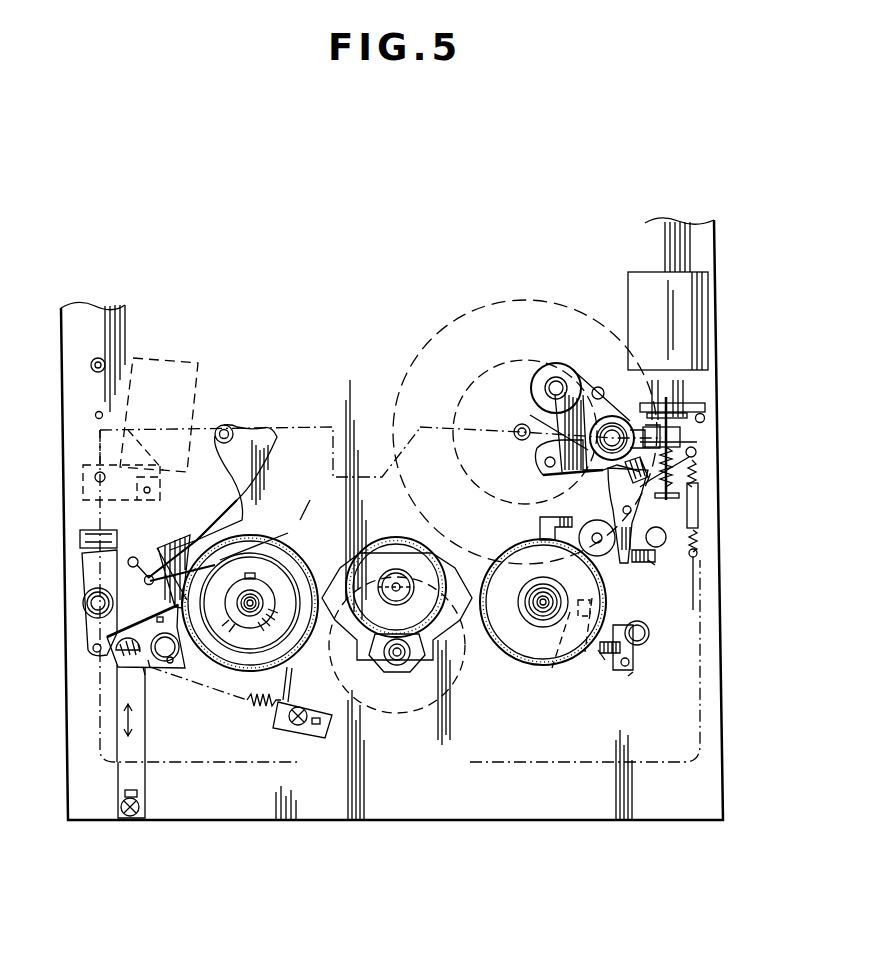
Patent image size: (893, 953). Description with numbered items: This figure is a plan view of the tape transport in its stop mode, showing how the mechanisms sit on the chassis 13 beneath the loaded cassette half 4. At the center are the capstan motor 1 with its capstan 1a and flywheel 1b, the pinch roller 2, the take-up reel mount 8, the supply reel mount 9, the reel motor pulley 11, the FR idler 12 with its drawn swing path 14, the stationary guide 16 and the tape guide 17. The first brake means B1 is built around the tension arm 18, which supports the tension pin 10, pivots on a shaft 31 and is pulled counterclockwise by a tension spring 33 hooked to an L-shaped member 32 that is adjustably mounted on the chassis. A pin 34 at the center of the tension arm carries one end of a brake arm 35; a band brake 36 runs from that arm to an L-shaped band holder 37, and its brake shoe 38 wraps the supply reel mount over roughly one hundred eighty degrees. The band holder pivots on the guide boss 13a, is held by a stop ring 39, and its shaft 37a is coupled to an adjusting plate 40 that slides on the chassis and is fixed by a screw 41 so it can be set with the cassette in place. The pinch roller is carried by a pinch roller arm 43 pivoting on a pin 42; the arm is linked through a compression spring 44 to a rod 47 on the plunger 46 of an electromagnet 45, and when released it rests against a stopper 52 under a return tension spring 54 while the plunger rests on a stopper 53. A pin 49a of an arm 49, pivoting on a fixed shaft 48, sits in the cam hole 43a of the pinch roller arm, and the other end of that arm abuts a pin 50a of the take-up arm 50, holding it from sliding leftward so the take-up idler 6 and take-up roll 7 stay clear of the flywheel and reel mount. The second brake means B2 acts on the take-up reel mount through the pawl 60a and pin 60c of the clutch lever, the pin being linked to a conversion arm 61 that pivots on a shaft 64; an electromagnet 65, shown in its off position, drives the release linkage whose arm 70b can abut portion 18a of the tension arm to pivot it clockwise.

The capstan motor 1 is at (485, 305).
The capstan 1a is at (512, 436).
The flywheel 1b is at (492, 366).
The pinch roller 2 is at (556, 363).
The cassette half 4 is at (700, 710).
The take-up idler 6 is at (630, 590).
The take-up roll 7 is at (587, 522).
The take-up reel mount 8 is at (506, 667).
The supply reel mount 9 is at (291, 660).
The tension pin 10 is at (224, 425).
The reel motor pulley 11 is at (401, 666).
The FR idler 12 is at (390, 537).
The chassis 13 is at (723, 670).
The guide boss 13a is at (177, 709).
The dashed circle roller path 14 is at (448, 670).
The stationary guide 16 is at (96, 410).
The tape guide 17 is at (96, 360).
The tension arm 18 is at (272, 466).
The portion of tension arm 18a is at (128, 577).
The shaft 31 is at (83, 605).
The L-shaped member 32 is at (332, 725).
The tension spring 33 is at (260, 708).
The pin 34 is at (134, 557).
The brake arm 35 is at (172, 548).
The band brake 36 is at (281, 531).
The band holder 37 is at (146, 622).
The shaft 37a is at (150, 665).
The brake shoe 38 is at (325, 570).
The stop ring 39 is at (190, 655).
The adjusting plate 40 is at (115, 730).
The screw 41 is at (147, 800).
The pin 42 is at (625, 420).
The pinch roller arm 43 is at (540, 470).
The cam hole 43a is at (555, 420).
The compression spring 44 is at (703, 507).
The electromagnet 45 is at (709, 322).
The plunger 46 is at (690, 395).
The rod 47 is at (700, 452).
The fixed shaft 48 is at (700, 558).
The arm 49 is at (652, 552).
The pin 49a is at (703, 532).
The take-up arm 50 is at (540, 522).
The pin 50a is at (648, 562).
The stopper 52 is at (598, 387).
The stopper 53 is at (706, 417).
The return tension spring 54 is at (706, 472).
The pawl 60a is at (548, 665).
The pin 60c is at (600, 665).
The conversion arm 61 is at (608, 656).
The shaft 64 is at (648, 638).
The electromagnet 65 is at (176, 358).
The arm of release arm 70b is at (80, 535).
The first brake means B1 is at (317, 498).
The second brake means B2 is at (636, 680).